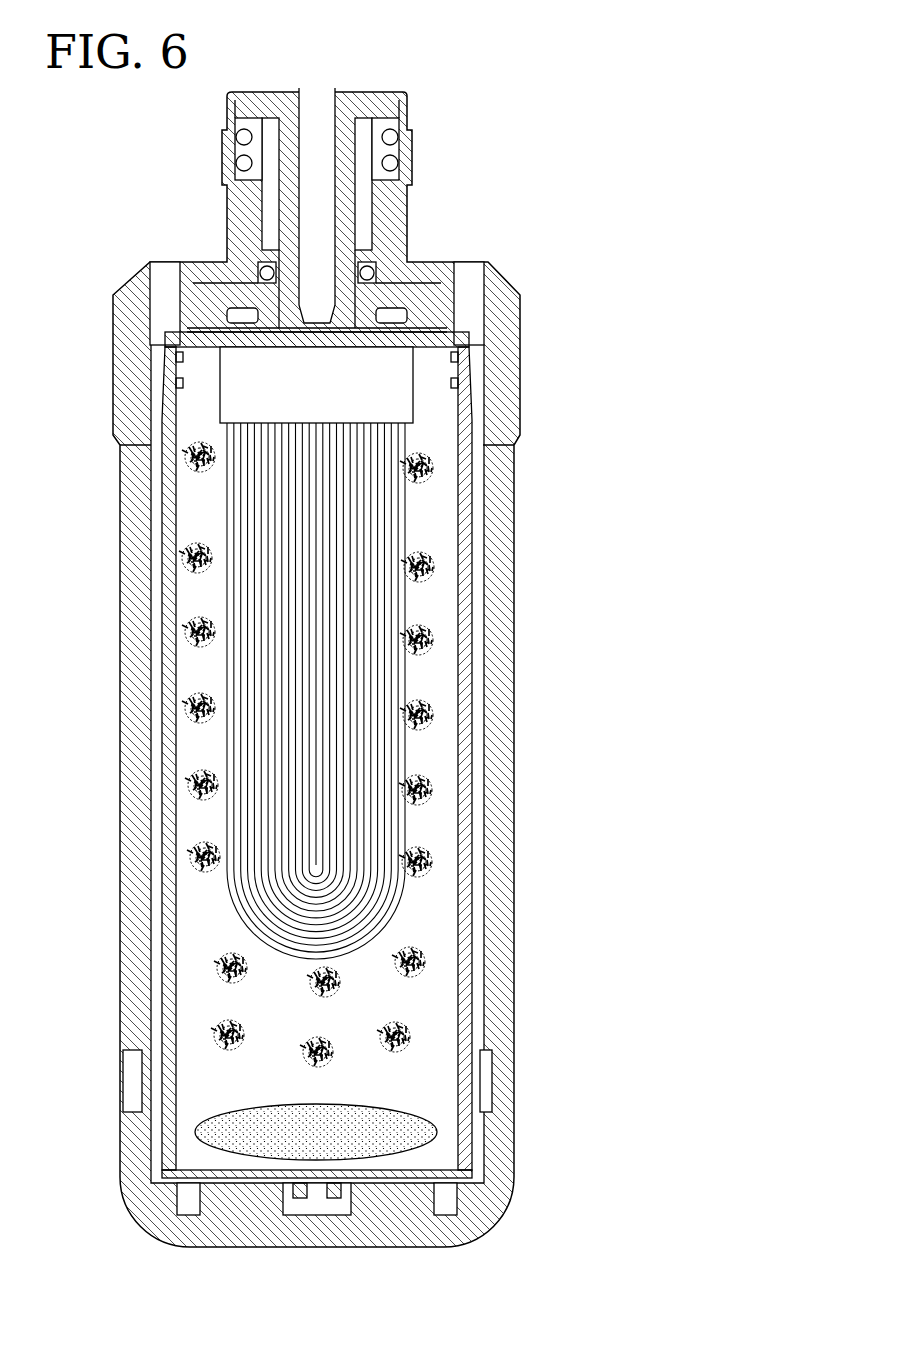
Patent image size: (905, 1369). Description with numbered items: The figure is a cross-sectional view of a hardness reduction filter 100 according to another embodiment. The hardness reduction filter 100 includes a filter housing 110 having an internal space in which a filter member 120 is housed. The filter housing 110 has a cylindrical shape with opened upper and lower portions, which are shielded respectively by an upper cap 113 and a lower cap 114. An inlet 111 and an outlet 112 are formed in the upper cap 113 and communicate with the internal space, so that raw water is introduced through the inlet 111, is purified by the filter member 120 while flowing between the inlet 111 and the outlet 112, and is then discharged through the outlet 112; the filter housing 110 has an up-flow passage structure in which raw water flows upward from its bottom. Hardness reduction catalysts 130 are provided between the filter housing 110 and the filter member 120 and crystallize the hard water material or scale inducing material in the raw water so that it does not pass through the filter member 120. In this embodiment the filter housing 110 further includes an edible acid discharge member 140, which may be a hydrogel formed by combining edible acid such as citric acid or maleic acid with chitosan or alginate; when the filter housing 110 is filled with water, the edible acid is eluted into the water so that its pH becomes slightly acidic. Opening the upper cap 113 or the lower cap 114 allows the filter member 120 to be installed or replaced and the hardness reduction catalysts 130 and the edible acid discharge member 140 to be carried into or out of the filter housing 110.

The hardness reduction filter 100 is at (353, 663).
The filter housing 110 is at (500, 640).
The inlet 111 is at (176, 282).
The outlet 112 is at (317, 88).
The upper cap 113 is at (496, 298).
The lower cap 114 is at (500, 1160).
The filter member 120 is at (390, 506).
The hardness reduction catalysts 130 is at (425, 562).
The edible acid discharge member 140 is at (383, 1140).